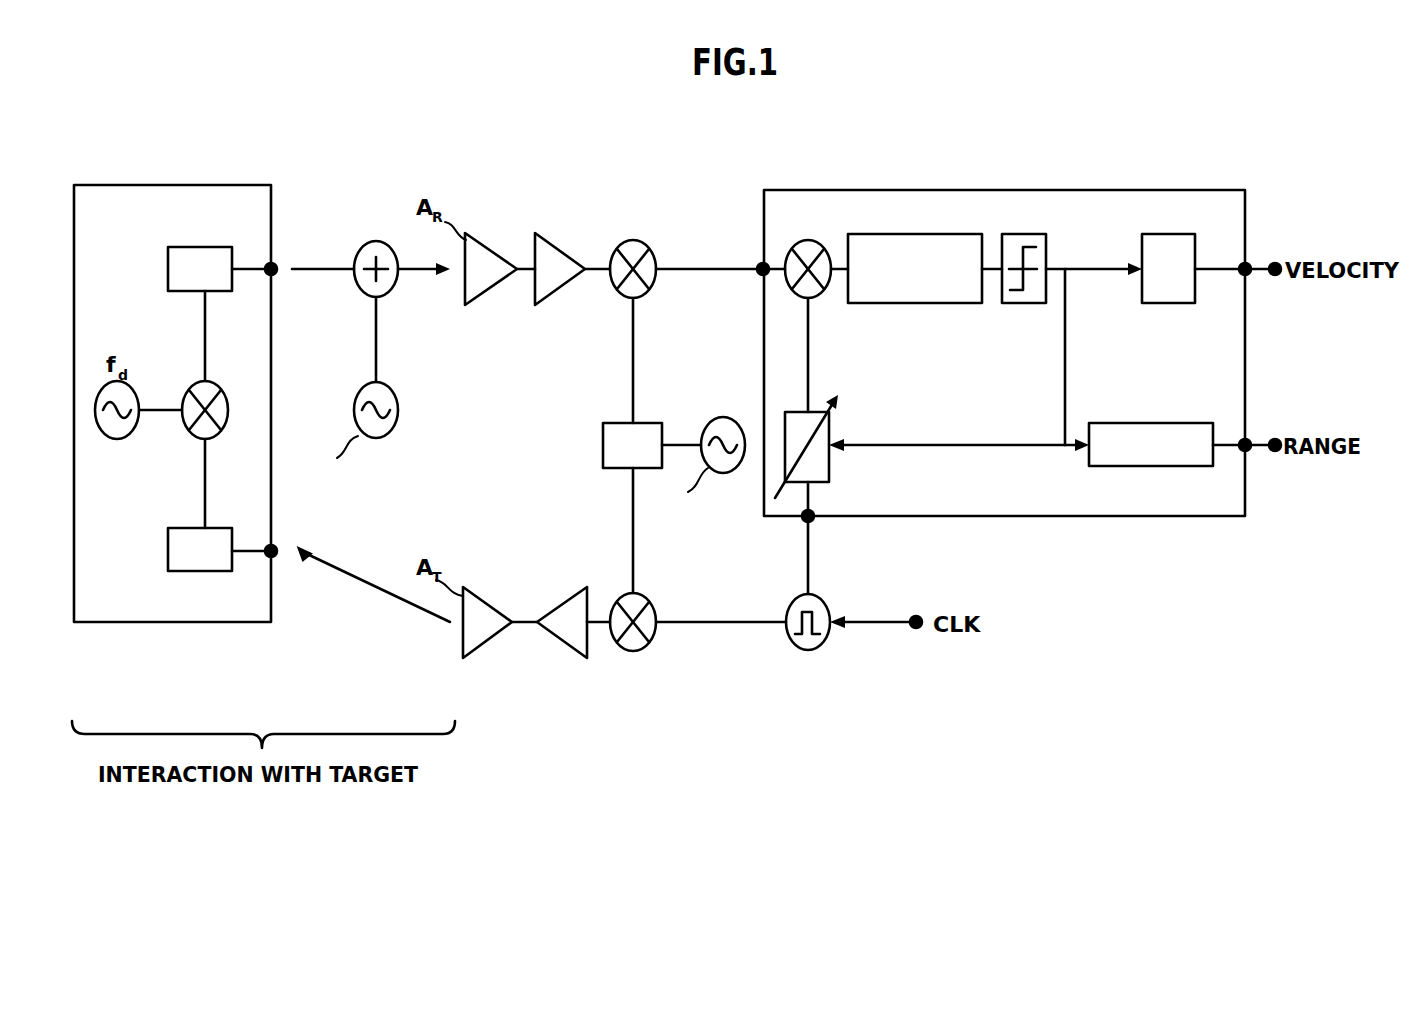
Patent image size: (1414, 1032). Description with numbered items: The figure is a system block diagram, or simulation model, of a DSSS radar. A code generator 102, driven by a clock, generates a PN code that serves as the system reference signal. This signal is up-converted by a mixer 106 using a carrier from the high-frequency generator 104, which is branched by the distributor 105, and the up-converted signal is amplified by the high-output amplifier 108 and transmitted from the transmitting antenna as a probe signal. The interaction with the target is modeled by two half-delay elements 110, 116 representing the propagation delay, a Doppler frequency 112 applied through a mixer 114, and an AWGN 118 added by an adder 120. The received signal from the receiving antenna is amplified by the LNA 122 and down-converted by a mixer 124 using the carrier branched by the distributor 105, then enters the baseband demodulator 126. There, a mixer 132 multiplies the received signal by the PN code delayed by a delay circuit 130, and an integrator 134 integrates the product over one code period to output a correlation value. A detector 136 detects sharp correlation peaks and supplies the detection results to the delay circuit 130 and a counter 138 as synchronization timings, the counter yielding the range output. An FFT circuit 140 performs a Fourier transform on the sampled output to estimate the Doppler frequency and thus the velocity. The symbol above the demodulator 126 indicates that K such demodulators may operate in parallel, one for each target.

The code generator 102 is at (808, 651).
The high-frequency generator 104 is at (715, 418).
The distributor 105 is at (620, 424).
The mixer 106 is at (636, 651).
The high-output amplifier 108 is at (562, 600).
The τ/2 delay 110 is at (168, 553).
The Doppler frequency 112 is at (118, 439).
The mixer 114 is at (193, 436).
The τ/2 delay 116 is at (168, 262).
The AWGN 118 is at (358, 397).
The adder 120 is at (364, 248).
The LNA 122 is at (553, 246).
The mixer 124 is at (637, 243).
The baseband demodulator 126 is at (984, 190).
The delay circuit 130 is at (830, 470).
The mixer 132 is at (811, 243).
The integrator 134 is at (890, 304).
The detector 136 is at (1018, 234).
The counter 138 is at (1155, 423).
The FFT circuit 140 is at (1160, 234).